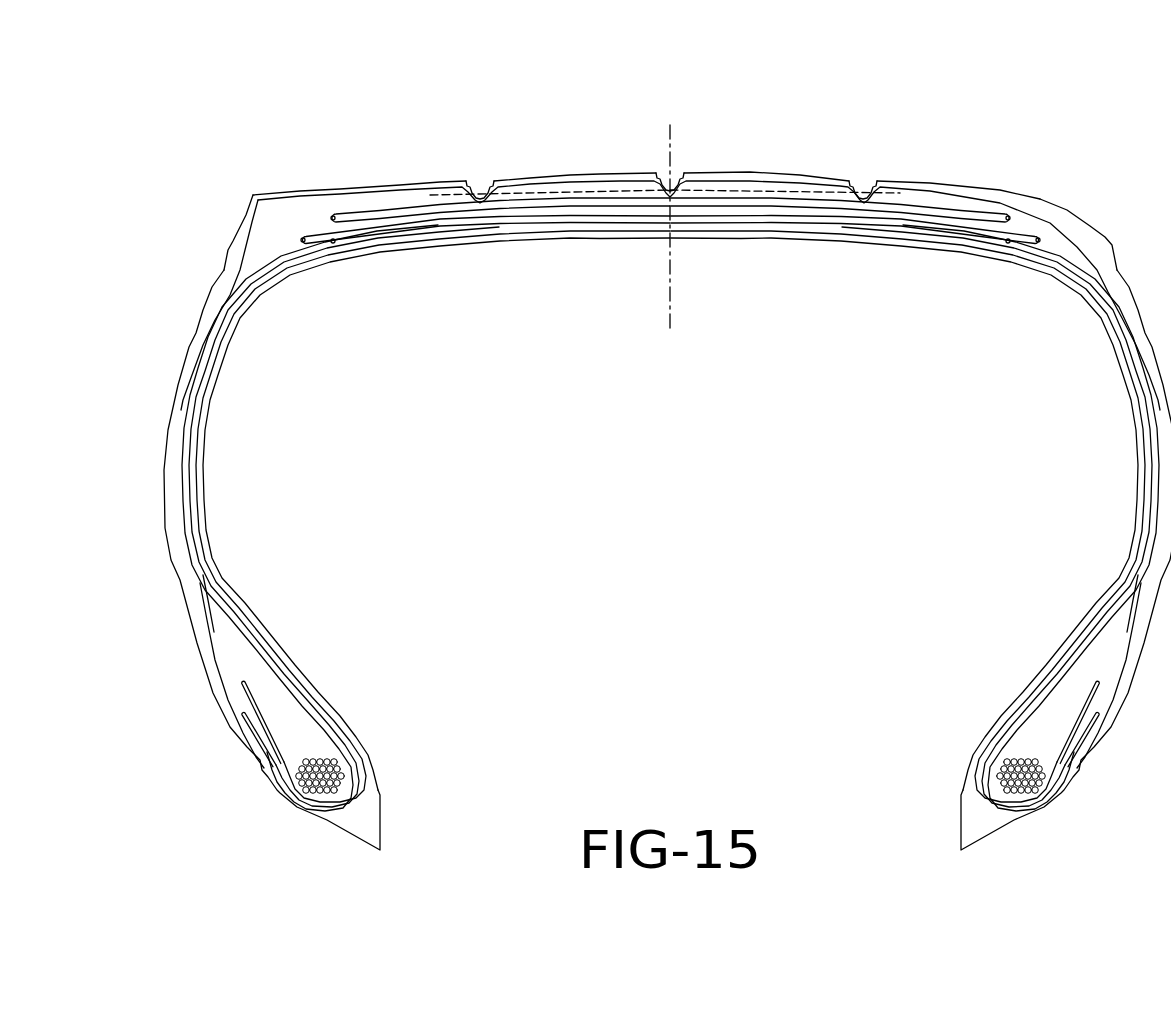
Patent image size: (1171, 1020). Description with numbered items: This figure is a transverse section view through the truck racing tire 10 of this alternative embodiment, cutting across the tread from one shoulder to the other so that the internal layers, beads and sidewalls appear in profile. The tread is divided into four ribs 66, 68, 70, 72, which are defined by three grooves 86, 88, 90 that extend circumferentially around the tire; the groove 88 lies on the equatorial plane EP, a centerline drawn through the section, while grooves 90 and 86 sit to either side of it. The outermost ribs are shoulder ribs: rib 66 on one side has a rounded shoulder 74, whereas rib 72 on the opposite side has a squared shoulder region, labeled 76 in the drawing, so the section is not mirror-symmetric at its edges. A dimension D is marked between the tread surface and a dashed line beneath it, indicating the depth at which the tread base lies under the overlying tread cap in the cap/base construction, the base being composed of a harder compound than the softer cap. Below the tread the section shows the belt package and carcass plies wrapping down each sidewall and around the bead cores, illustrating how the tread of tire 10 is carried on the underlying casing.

The truck racing tire 10 is at (655, 447).
The rib 66 is at (950, 183).
The rib 68 is at (784, 169).
The rib 70 is at (552, 170).
The rib 72 is at (343, 187).
The rounded shoulder 74 is at (1067, 211).
The left shoulder 76 is at (262, 197).
The groove 86 is at (862, 194).
The groove 88 is at (678, 186).
The groove 90 is at (481, 196).
The depth D is at (583, 179).
The equatorial plane EP is at (671, 227).